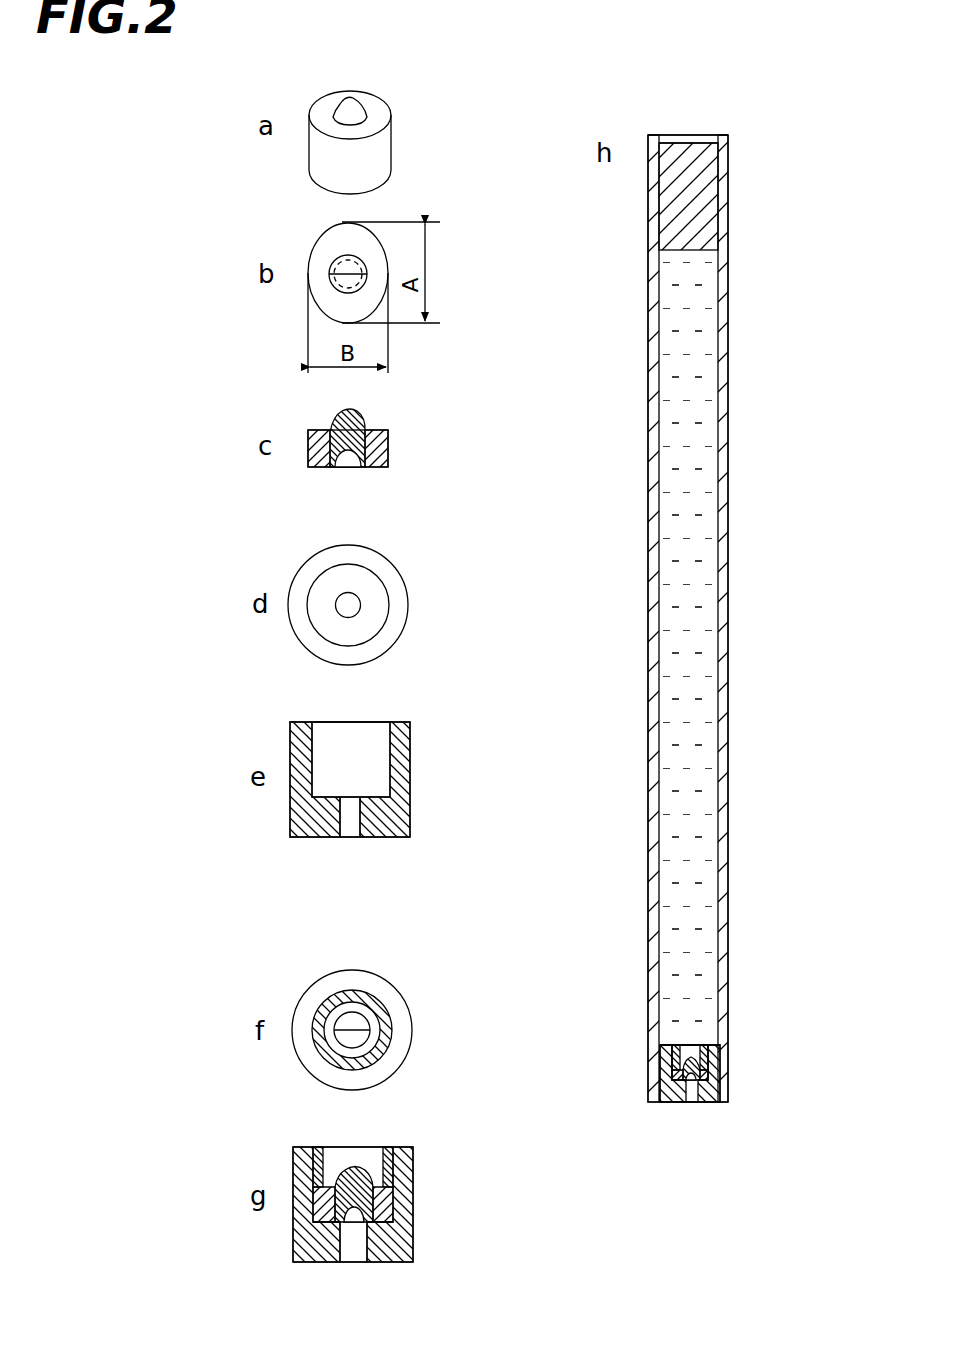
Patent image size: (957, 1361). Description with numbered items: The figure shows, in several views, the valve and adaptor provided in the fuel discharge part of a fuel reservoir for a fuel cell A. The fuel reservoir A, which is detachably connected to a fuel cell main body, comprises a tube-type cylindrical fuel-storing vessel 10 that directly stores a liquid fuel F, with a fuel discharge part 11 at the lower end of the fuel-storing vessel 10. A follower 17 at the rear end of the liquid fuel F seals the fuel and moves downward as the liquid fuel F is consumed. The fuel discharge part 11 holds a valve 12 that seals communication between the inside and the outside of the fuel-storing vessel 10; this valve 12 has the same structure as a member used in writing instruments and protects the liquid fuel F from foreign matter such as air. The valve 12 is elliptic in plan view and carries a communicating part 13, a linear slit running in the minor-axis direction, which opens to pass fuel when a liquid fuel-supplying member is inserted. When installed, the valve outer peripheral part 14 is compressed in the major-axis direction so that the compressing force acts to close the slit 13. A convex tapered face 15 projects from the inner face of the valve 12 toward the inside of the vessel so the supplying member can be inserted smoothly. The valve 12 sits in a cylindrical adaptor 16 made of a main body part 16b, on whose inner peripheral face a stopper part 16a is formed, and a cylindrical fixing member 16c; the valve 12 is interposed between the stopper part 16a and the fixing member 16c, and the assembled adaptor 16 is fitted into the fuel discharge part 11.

The fuel-storing vessel 10 is at (728, 692).
The fuel discharge part 11 is at (748, 1069).
The valve 12 is at (404, 118).
The communicating part 13 is at (350, 270).
The valve outer peripheral part 14 is at (378, 257).
The convex tapered face 15 is at (355, 417).
The adaptor 16 is at (422, 736).
The stopper part 16a is at (380, 800).
The main body part 16b is at (375, 774).
The fixing member 16c is at (388, 1148).
The follower 17 is at (690, 165).
The fuel reservoir for a fuel cell A is at (760, 190).
The liquid fuel F is at (705, 513).